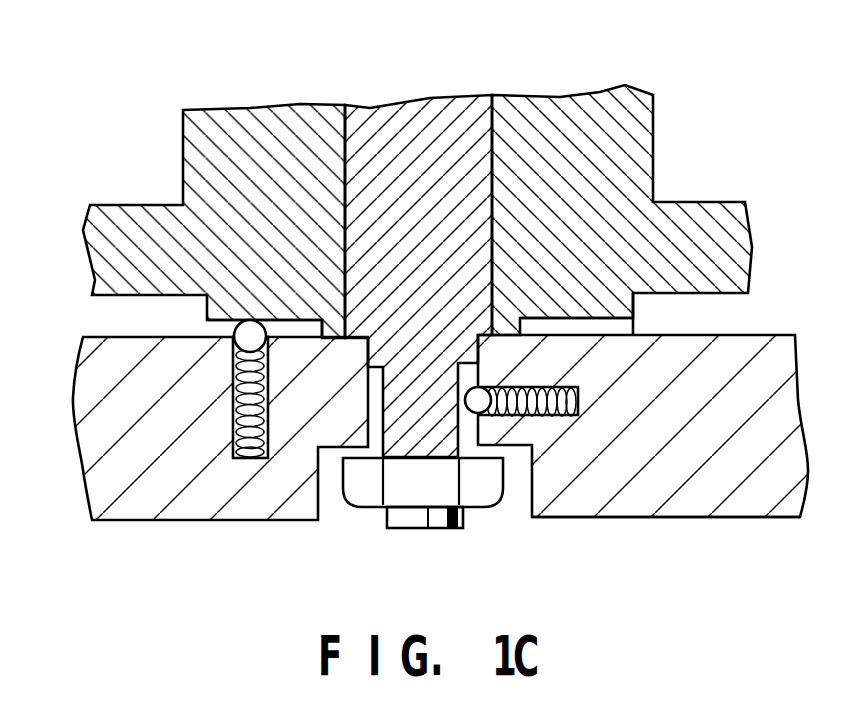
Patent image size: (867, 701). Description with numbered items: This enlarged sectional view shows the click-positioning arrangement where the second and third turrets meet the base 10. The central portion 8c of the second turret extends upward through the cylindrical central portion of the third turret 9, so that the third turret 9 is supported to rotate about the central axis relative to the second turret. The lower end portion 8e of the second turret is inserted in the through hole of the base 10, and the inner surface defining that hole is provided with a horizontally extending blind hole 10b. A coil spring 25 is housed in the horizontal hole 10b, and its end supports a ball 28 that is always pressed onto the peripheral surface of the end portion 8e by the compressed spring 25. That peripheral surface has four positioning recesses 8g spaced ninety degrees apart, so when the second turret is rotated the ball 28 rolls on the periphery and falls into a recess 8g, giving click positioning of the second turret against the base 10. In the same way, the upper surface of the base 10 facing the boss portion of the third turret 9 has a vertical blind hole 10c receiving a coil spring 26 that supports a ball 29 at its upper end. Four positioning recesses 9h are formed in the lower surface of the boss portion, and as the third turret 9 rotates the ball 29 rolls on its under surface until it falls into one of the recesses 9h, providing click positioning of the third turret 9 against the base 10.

The third turret 9 is at (232, 133).
The central portion of the second turret 8c is at (377, 142).
The positioning recesses 9h is at (220, 330).
The ball 29 is at (240, 340).
The coil spring 26 is at (243, 458).
The vertical blind hole 10c is at (215, 457).
The lower end portion of the second turret 8e is at (392, 435).
The positioning recesses 8g is at (450, 435).
The ball 28 is at (475, 410).
The coil spring 25 is at (640, 335).
The horizontal blind hole 10b is at (549, 410).
The base 10 is at (743, 510).